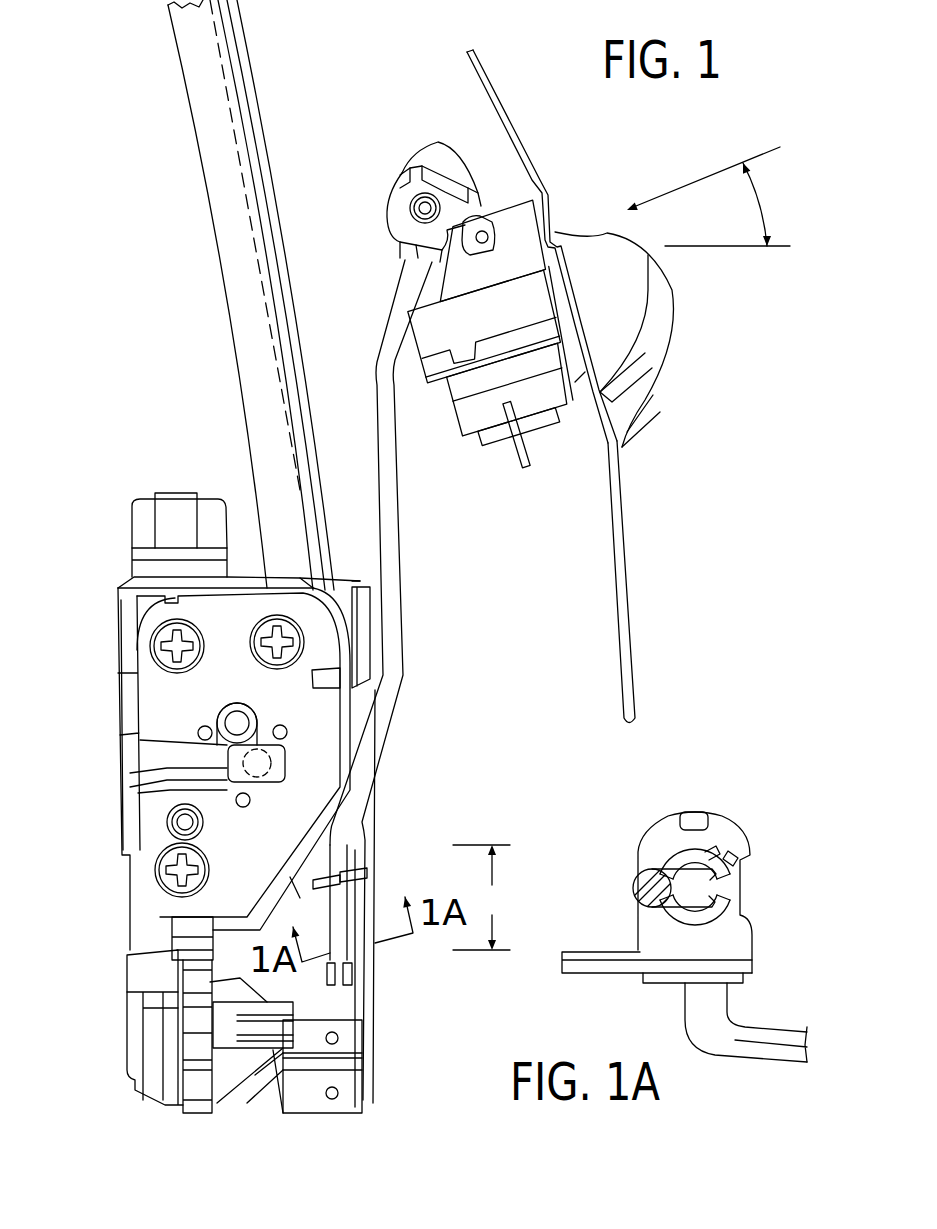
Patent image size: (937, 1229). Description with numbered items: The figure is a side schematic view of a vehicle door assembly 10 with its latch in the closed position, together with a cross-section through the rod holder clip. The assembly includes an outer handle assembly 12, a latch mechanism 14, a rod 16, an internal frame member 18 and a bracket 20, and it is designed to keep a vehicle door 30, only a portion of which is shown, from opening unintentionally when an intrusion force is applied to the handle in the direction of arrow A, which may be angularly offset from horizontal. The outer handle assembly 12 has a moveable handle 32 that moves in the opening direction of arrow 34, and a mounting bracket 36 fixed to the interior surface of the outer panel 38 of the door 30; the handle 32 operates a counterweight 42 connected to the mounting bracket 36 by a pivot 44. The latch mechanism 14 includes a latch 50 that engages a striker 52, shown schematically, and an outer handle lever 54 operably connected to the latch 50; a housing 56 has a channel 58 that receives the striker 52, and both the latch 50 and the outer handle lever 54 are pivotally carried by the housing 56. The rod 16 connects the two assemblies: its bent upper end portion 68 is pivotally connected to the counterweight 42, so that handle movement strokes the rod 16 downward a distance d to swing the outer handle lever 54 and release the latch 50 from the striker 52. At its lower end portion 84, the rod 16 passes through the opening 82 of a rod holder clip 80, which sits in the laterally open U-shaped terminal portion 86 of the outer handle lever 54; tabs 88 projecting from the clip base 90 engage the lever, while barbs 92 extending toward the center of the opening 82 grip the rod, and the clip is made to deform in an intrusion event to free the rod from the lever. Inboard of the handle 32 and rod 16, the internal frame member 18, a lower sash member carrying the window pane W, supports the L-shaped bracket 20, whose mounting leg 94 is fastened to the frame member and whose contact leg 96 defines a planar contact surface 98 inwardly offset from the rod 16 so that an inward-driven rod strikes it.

In FIG. 1, the vehicle door assembly 10 is at (113, 409).
In FIG. 1, the window pane W is at (250, 224).
In FIG. 1, the internal frame member 18 is at (235, 283).
In FIG. 1, the outer handle assembly 12 is at (698, 307).
In FIG. 1, the latch mechanism 14 is at (98, 674).
In FIG. 1, the rod 16 is at (453, 597).
In FIG. 1, the bracket 20 is at (352, 556).
In FIG. 1, the vehicle door 30 is at (671, 584).
In FIG. 1, the moveable handle 32 is at (662, 343).
In FIG. 1, the opening direction arrow 34 is at (728, 339).
In FIG. 1, the mounting bracket 36 is at (582, 352).
In FIG. 1, the outer panel 38 is at (620, 517).
In FIG. 1, the counterweight 42 is at (437, 150).
In FIG. 1, the pivot 44 is at (484, 230).
In FIG. 1, the latch 50 is at (235, 763).
In FIG. 1, the striker 52 is at (268, 768).
In FIG. 1, the outer handle lever 54 is at (300, 900).
In FIG. 1A, the outer handle lever 54 is at (603, 967).
In FIG. 1, the housing 56 is at (128, 625).
In FIG. 1, the channel 58 is at (142, 773).
In FIG. 1, the bent upper end portion 68 is at (418, 205).
In FIG. 1, the rod holder clip 80 is at (388, 868).
In FIG. 1A, the rod holder clip 80 is at (763, 884).
In FIG. 1A, the opening 82 is at (736, 858).
In FIG. 1, the lower end portion 84 is at (340, 870).
In FIG. 1A, the lower end portion 84 is at (775, 1033).
In FIG. 1A, the U-shaped terminal portion 86 is at (730, 837).
In FIG. 1A, the tabs 88 is at (713, 847).
In FIG. 1A, the base 90 is at (740, 908).
In FIG. 1A, the barbs 92 is at (686, 855).
In FIG. 1, the mounting leg 94 is at (313, 587).
In FIG. 1, the contact leg 96 is at (362, 578).
In FIG. 1, the contact surface 98 is at (375, 651).
In FIG. 1, the arrow A is at (712, 173).
In FIG. 1, the distance d is at (481, 897).